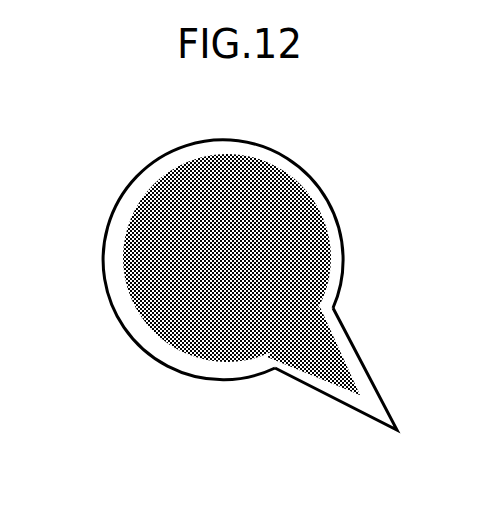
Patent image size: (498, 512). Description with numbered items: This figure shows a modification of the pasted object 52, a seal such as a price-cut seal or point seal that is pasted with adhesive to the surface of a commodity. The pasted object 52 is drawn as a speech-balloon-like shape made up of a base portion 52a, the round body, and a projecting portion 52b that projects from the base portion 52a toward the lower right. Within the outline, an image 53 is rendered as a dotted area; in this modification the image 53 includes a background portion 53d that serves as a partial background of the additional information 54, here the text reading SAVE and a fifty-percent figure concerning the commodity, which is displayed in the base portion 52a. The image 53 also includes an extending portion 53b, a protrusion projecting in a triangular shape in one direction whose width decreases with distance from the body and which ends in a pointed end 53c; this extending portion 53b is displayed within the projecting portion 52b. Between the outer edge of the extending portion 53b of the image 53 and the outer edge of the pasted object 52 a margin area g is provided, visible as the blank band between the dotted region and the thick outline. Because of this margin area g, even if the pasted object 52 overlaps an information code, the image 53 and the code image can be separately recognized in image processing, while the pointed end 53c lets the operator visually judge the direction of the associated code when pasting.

The pasted object 52 is at (274, 265).
The base portion 52a is at (165, 368).
The projecting portion 52b is at (360, 355).
The image 53 is at (250, 301).
The extending portion 53b is at (359, 378).
The pointed end 53c is at (357, 392).
The background portion 53d is at (308, 220).
The additional information 54 is at (130, 282).
The margin area g is at (149, 174).